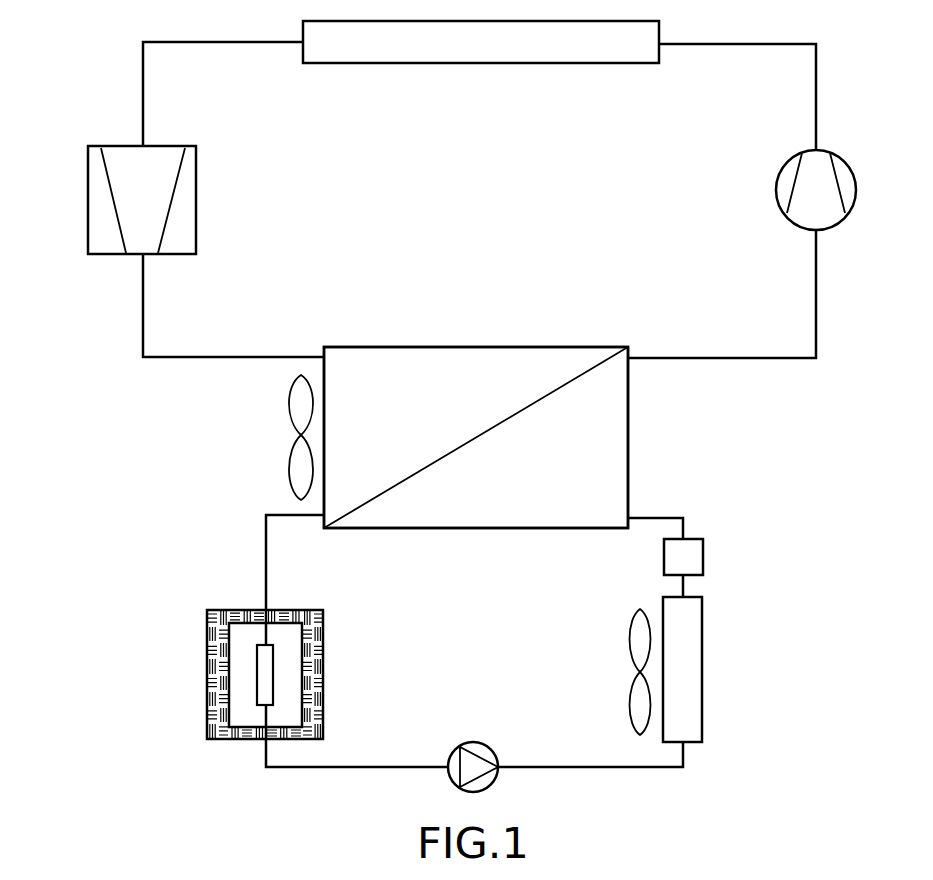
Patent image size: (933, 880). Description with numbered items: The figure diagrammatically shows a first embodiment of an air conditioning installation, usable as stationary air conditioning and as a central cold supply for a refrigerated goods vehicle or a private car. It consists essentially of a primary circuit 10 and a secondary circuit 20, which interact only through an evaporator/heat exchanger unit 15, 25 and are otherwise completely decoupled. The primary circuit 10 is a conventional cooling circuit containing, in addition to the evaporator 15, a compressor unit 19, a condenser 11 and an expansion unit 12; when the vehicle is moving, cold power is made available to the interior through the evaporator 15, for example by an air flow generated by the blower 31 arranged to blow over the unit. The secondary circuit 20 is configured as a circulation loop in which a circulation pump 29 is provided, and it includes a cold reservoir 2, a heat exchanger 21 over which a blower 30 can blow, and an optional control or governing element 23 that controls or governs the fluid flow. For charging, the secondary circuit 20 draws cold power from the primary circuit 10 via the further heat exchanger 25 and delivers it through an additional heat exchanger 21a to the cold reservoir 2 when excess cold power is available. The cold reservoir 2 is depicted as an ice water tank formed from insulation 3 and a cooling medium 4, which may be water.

The cold reservoir 2 is at (258, 655).
The insulation 3 is at (318, 628).
The cooling medium 4 is at (282, 630).
The primary circuit 10 is at (118, 341).
The condenser 11 is at (477, 63).
The expansion unit 12 is at (90, 186).
The evaporator 15 is at (437, 352).
The compressor unit 19 is at (840, 157).
The secondary circuit 20 is at (246, 533).
The heat exchanger 21 is at (695, 687).
The additional heat exchanger 21a is at (272, 695).
The control or governing element 23 is at (693, 543).
The further heat exchanger 25 is at (437, 352).
The circulation pump 29 is at (485, 740).
The blower 30 is at (632, 628).
The blower 31 is at (298, 462).